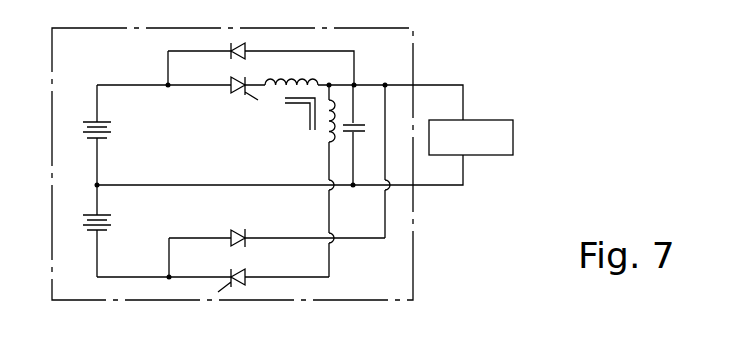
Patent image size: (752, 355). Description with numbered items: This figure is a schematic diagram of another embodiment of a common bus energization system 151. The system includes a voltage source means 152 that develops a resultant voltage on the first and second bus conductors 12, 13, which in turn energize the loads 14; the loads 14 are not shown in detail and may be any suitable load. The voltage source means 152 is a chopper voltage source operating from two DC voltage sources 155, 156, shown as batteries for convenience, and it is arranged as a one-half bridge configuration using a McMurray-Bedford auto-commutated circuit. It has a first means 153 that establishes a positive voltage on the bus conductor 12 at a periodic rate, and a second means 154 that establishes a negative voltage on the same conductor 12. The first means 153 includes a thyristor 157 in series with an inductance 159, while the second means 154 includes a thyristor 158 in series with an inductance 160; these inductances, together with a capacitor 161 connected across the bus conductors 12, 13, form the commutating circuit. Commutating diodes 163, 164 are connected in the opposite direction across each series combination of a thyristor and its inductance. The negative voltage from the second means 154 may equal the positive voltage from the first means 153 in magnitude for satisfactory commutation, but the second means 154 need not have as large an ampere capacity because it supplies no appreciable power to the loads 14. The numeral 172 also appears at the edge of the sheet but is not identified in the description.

The first bus conductor 12 is at (428, 87).
The second bus conductor 13 is at (437, 186).
The loads 14 is at (483, 119).
The common bus energization system 151 is at (267, 167).
The voltage source means 152 is at (415, 250).
The first means 153 is at (250, 150).
The second means 154 is at (275, 215).
The DC voltage source 155 is at (108, 122).
The DC voltage source 156 is at (108, 215).
The thyristor 157 is at (228, 90).
The thyristor 158 is at (248, 272).
The inductance 159 is at (287, 81).
The inductance 160 is at (331, 104).
The capacitor 161 is at (352, 133).
The commutating diode 163 is at (246, 46).
The commutating diode 164 is at (232, 232).
The circuit element 172 is at (496, 351).